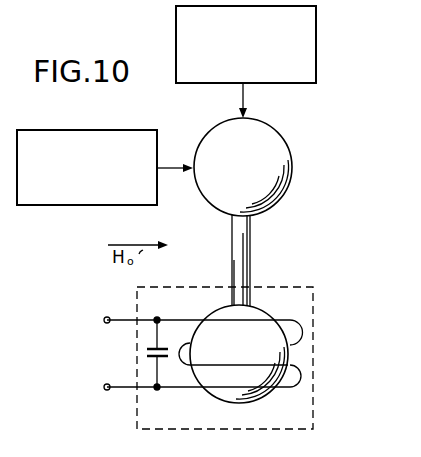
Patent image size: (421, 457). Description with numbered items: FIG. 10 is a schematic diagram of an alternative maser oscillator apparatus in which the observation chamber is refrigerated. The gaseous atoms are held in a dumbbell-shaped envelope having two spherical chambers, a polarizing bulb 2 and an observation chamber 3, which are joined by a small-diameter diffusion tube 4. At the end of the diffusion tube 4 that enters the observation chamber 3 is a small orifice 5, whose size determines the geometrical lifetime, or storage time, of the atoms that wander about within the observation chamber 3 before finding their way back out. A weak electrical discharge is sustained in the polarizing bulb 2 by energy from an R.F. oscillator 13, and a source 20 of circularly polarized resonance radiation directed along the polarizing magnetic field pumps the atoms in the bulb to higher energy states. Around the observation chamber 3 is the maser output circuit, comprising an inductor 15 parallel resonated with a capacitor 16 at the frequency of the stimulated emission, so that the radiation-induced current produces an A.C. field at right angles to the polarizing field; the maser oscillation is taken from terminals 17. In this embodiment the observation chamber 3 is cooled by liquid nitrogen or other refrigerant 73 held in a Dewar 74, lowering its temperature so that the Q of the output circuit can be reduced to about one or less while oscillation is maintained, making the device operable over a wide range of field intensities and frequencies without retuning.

The R.F. oscillator 13 is at (316, 36).
The circularly polarized resonance radiation source 20 is at (157, 148).
The polarizing bulb 2 is at (236, 156).
The diffusion tube 4 is at (250, 250).
The orifice 5 is at (238, 303).
The inductor 15 is at (293, 323).
The observation chamber 3 is at (232, 350).
The capacitor 16 is at (147, 349).
The terminals 17 is at (104, 320).
The refrigerant 73 is at (278, 426).
The Dewar 74 is at (311, 396).